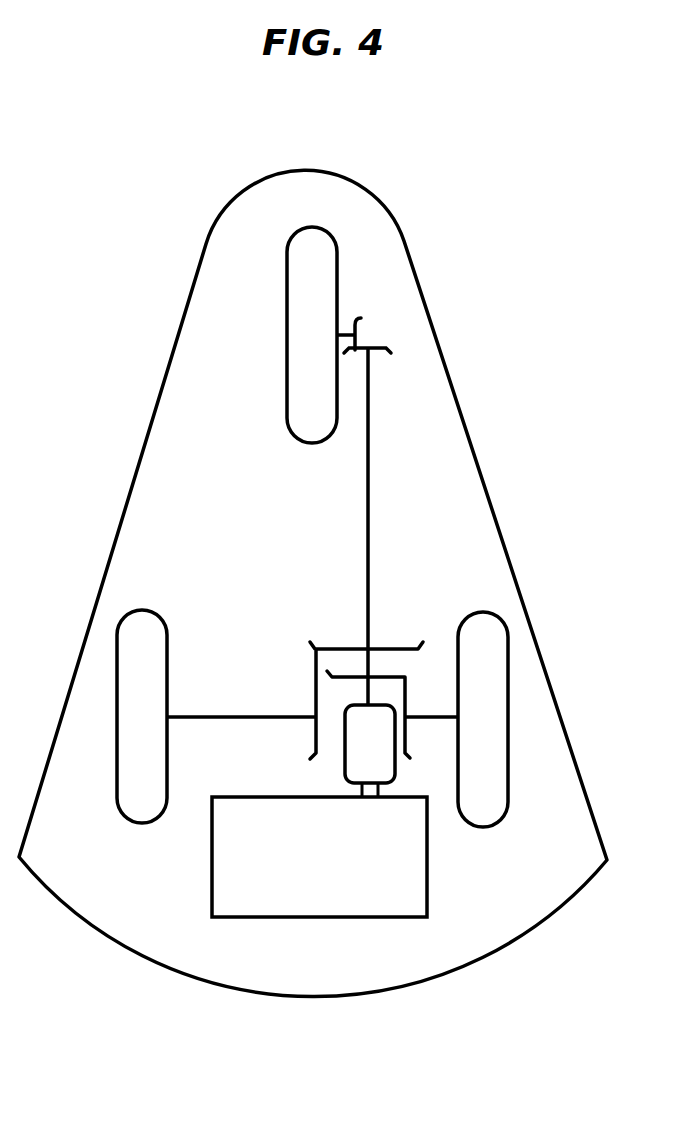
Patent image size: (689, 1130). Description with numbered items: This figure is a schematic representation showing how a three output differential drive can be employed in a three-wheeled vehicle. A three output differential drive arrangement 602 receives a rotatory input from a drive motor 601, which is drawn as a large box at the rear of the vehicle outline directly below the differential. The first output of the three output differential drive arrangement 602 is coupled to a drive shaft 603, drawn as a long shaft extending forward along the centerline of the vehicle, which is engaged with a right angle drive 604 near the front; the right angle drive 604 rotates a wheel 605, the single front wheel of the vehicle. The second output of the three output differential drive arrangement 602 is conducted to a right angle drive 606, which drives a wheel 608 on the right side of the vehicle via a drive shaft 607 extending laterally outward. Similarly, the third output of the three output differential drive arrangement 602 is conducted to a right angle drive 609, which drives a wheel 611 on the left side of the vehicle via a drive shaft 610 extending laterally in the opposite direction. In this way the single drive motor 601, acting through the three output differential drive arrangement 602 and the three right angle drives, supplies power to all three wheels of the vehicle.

The drive motor 601 is at (307, 918).
The three output differential drive arrangement 602 is at (345, 772).
The drive shaft 603 is at (370, 527).
The right angle drive 604 is at (361, 334).
The wheel 605 is at (307, 275).
The right angle drive 606 is at (405, 675).
The drive shaft 607 is at (442, 721).
The wheel 608 is at (508, 648).
The right angle drive 609 is at (313, 647).
The drive shaft 610 is at (248, 715).
The wheel 611 is at (118, 723).